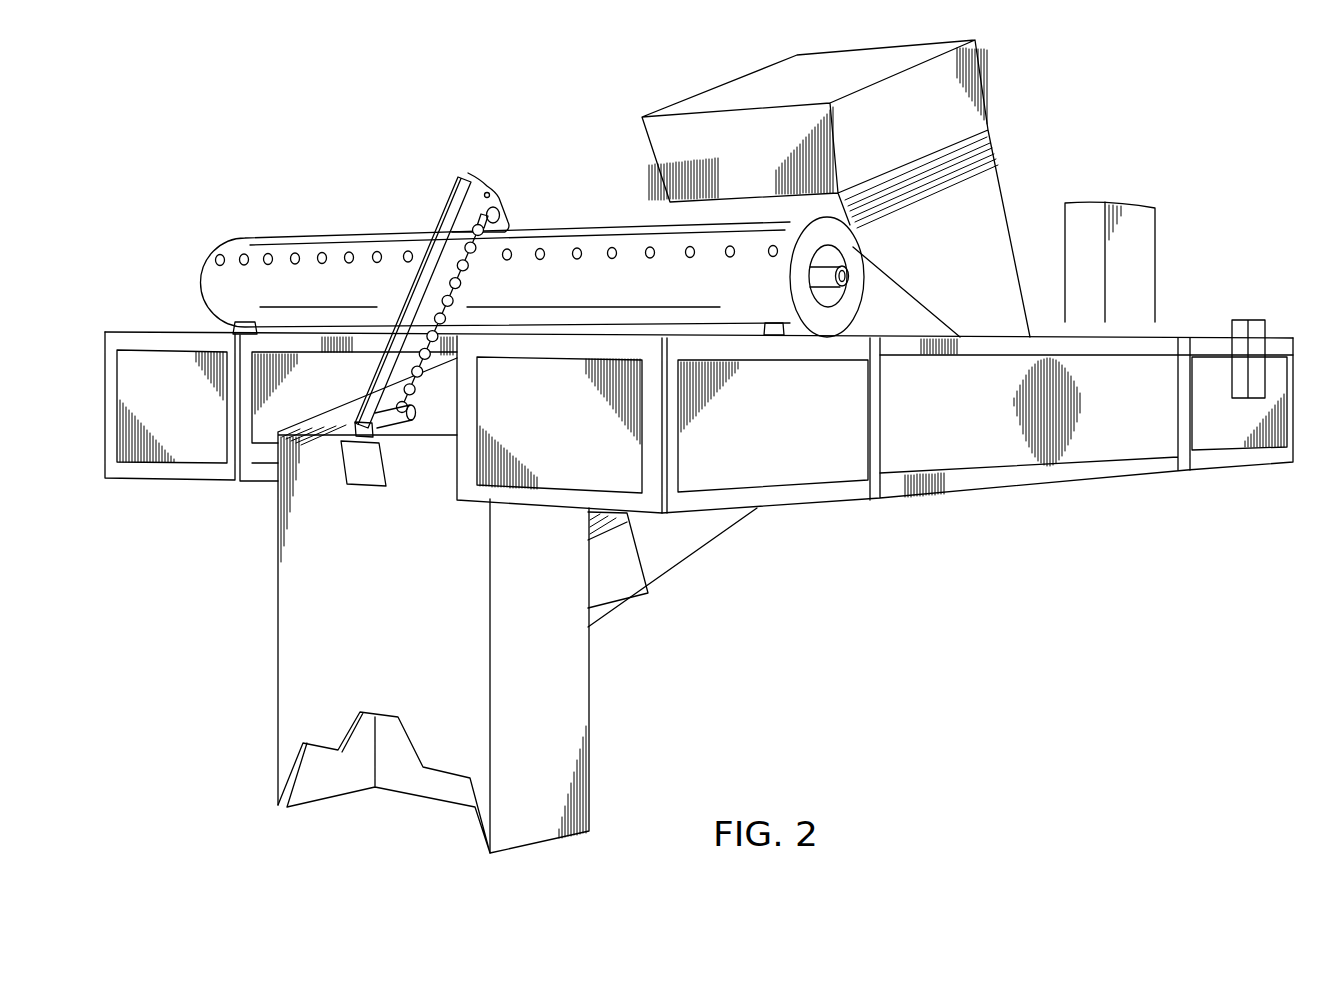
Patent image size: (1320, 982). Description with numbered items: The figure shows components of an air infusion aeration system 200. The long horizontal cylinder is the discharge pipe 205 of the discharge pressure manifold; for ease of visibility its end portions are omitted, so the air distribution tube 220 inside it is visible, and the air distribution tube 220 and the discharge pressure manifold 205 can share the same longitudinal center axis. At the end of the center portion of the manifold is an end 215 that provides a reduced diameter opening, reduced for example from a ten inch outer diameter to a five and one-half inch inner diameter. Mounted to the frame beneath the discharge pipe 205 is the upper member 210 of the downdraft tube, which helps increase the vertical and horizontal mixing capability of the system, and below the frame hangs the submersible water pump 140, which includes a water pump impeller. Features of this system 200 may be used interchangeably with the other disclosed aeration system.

The air infusion aeration system 200 is at (340, 185).
The discharge pipe 205 is at (555, 243).
The upper member of the downdraft tube 210 is at (286, 601).
The end 215 is at (850, 302).
The air distribution tube 220 is at (849, 276).
The submersible water pump 140 is at (610, 578).